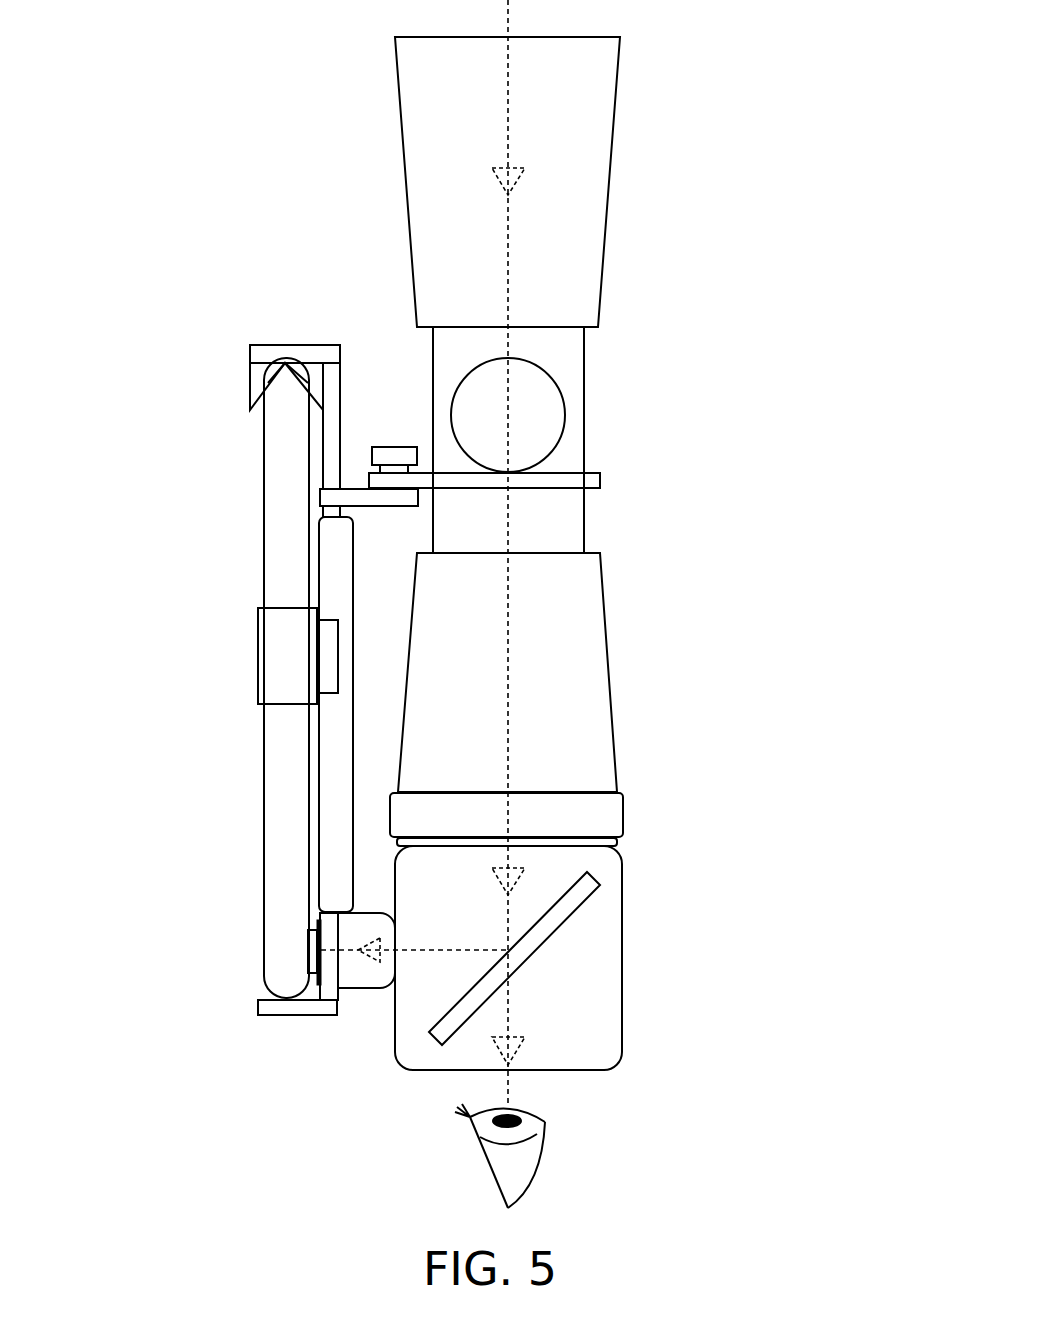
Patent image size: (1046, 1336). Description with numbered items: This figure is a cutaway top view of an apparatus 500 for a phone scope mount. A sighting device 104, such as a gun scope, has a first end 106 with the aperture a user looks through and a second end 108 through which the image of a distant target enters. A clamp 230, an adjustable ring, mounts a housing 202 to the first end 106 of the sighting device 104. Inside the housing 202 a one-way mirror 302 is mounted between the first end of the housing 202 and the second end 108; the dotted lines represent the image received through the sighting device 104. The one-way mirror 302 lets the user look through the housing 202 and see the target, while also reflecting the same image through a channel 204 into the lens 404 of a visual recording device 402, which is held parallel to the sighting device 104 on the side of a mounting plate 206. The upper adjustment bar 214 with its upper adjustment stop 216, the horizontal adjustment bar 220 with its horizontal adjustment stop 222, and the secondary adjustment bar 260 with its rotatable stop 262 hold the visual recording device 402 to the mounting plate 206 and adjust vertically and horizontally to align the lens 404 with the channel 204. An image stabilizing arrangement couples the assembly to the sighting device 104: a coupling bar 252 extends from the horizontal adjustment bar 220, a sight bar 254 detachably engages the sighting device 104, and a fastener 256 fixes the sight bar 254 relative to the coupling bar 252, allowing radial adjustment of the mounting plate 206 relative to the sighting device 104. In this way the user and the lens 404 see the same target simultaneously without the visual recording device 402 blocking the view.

The apparatus 500 is at (160, 44).
The second end 108 is at (590, 248).
The sighting device 104 is at (762, 410).
The sight bar 254 is at (600, 478).
The coupling bar 252 is at (395, 506).
The fastener 256 is at (393, 447).
The first end 106 is at (583, 680).
The clamp 230 is at (625, 808).
The housing 202 is at (605, 940).
The one-way mirror 302 is at (543, 933).
The mounting plate 206 is at (372, 280).
The horizontal adjustment stop 222 is at (280, 353).
The horizontal adjustment bar 220 is at (330, 372).
The visual recording device 402 is at (280, 765).
The upper adjustment stop 216 is at (267, 627).
The upper adjustment bar 214 is at (330, 650).
The lens 404 is at (315, 950).
The channel 204 is at (390, 923).
The secondary adjustment bar 260 is at (330, 995).
The rotatable stop 262 is at (300, 1017).